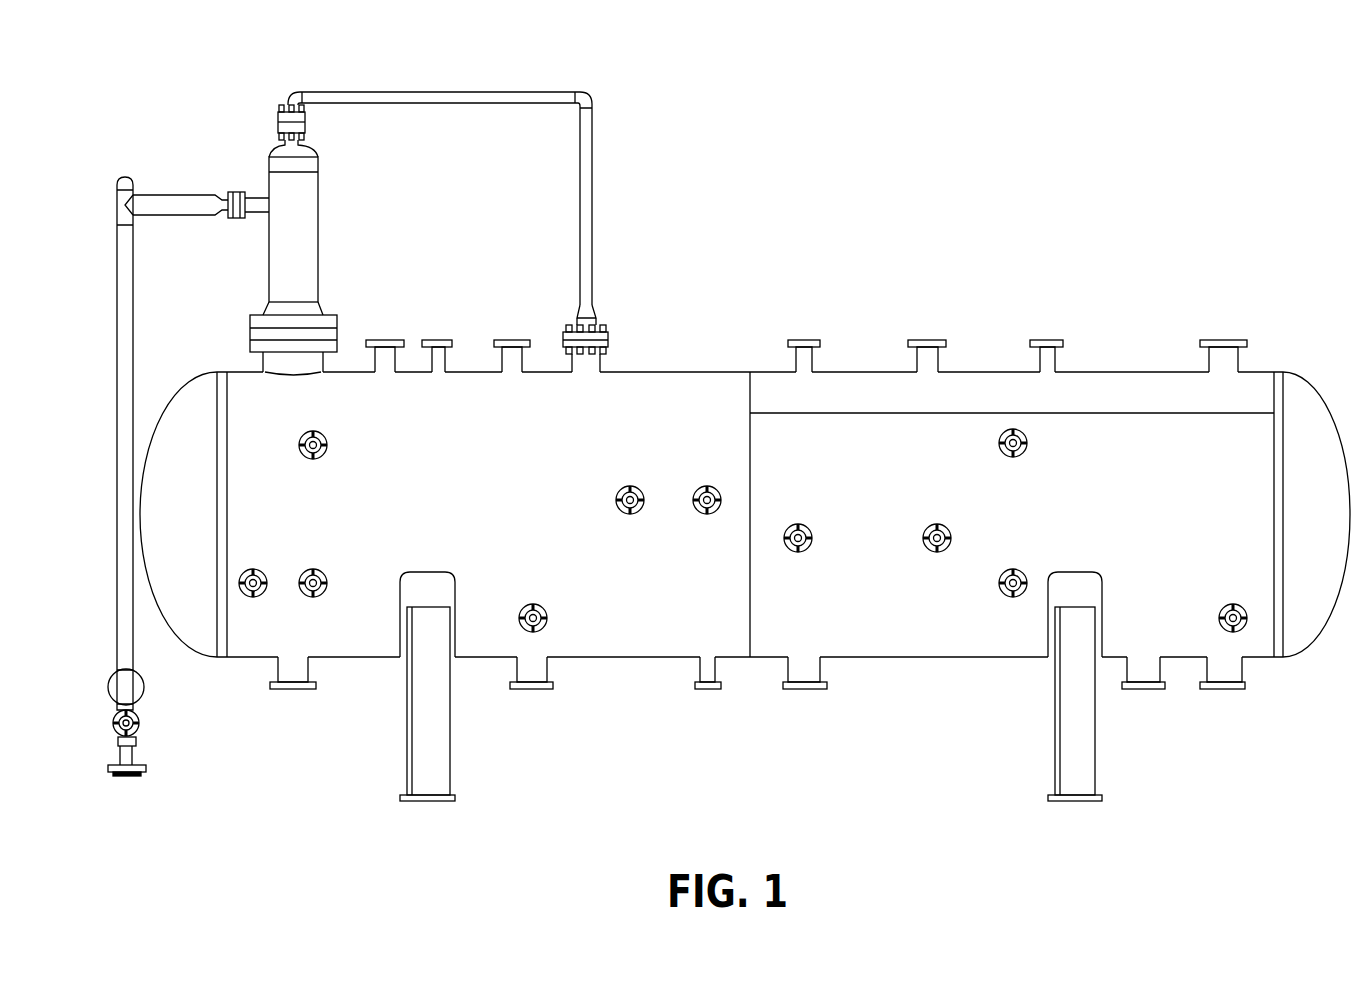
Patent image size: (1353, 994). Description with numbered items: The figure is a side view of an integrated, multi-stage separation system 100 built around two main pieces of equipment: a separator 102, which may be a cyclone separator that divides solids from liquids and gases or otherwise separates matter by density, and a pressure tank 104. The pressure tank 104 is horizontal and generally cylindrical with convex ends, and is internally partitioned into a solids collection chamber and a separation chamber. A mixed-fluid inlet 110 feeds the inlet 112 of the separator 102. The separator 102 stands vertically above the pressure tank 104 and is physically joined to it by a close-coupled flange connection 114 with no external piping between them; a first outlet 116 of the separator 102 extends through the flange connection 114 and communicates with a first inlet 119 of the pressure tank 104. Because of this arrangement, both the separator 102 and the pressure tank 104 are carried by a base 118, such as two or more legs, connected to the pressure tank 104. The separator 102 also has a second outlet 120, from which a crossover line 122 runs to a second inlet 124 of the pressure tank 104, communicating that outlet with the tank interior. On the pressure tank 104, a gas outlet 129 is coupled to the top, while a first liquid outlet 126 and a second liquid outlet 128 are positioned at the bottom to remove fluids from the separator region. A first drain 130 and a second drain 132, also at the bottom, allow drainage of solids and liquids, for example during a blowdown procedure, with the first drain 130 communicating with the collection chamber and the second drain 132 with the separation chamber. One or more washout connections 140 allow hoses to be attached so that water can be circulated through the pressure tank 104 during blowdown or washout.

The integrated multi-stage separation system 100 is at (1080, 64).
The separator 102 is at (278, 155).
The pressure tank 104 is at (684, 370).
The mixed-fluid inlet 110 is at (141, 712).
The inlet 112 is at (236, 220).
The flange connection 114 is at (250, 335).
The first outlet 116 is at (308, 297).
The base 118 is at (455, 782).
The first inlet 119 is at (311, 373).
The second outlet 120 is at (307, 128).
The crossover line 122 is at (429, 100).
The second inlet 124 is at (563, 333).
The first liquid outlet 126 is at (533, 690).
The second liquid outlet 128 is at (1146, 690).
The gas outlet 129 is at (1226, 340).
The first drain 130 is at (294, 690).
The second drain 132 is at (806, 690).
The washout connection 140 is at (258, 569).